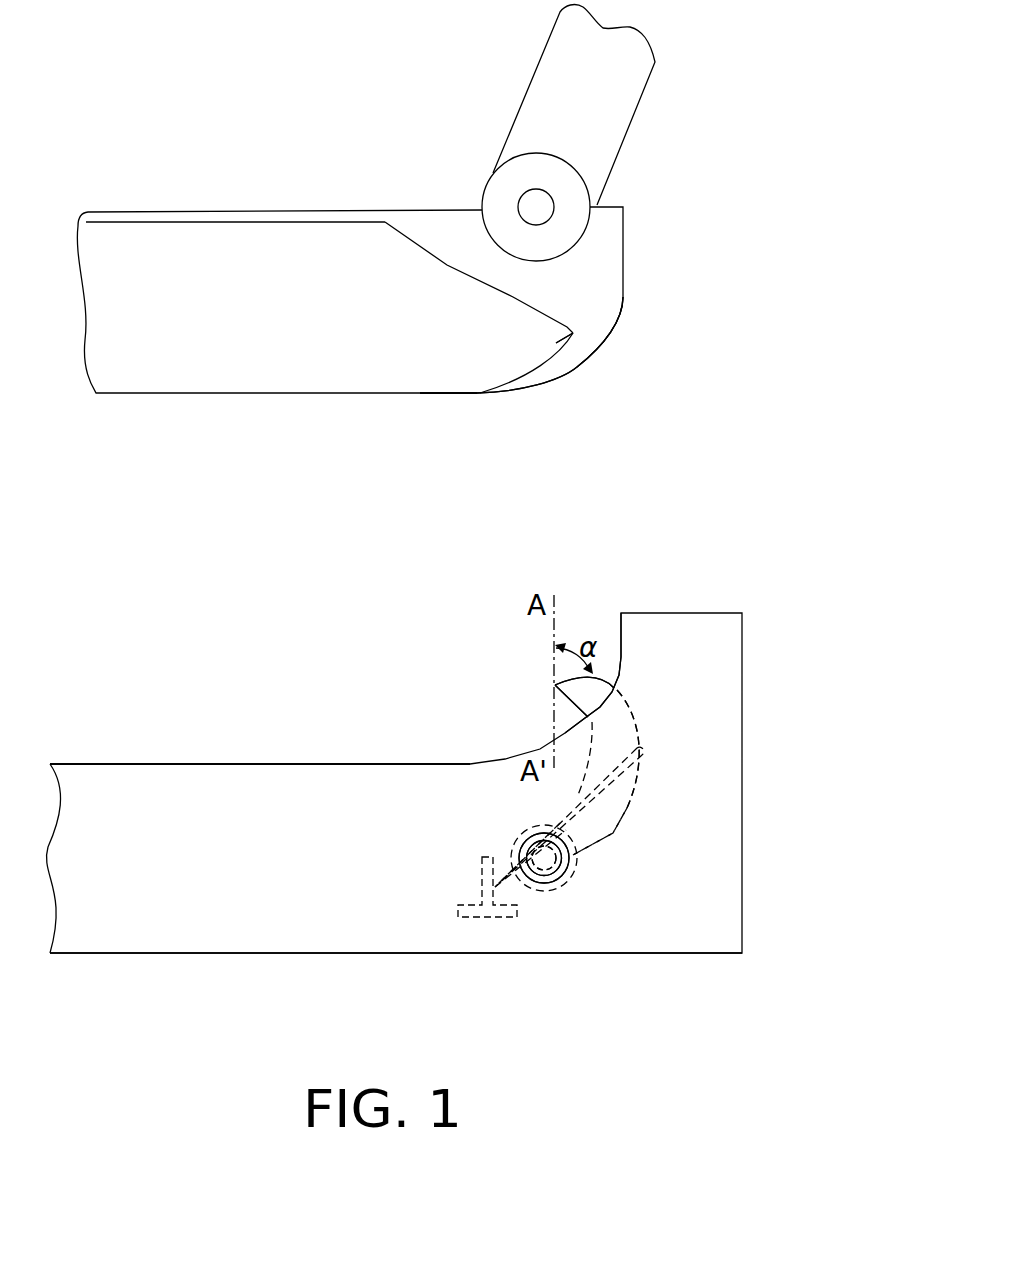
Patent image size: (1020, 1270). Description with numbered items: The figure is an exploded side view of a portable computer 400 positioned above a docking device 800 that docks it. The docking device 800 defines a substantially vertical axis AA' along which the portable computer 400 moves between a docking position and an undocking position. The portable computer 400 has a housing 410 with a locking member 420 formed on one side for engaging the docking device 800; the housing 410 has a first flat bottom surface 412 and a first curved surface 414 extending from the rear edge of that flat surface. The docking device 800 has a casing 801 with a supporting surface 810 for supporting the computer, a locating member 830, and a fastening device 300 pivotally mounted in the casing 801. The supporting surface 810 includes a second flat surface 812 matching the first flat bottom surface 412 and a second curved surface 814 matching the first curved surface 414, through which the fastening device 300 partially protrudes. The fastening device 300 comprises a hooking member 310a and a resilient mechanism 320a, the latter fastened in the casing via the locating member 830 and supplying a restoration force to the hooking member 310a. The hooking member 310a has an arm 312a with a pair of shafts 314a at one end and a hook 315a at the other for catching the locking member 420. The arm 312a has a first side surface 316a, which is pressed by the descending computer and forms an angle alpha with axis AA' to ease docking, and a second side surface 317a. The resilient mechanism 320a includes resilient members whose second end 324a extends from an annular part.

The portable computer 400 is at (371, 155).
The housing 410 is at (714, 378).
The first flat bottom surface 412 is at (435, 393).
The first curved surface 414 is at (591, 351).
The locking member 420 is at (573, 333).
The docking device 800 is at (743, 905).
The casing 801 is at (228, 954).
The supporting surface 810 is at (150, 764).
The second flat surface 812 is at (237, 763).
The second curved surface 814 is at (620, 650).
The locating member 830 is at (473, 910).
The fastening device 300 is at (627, 808).
The hooking member 310a is at (717, 1023).
The arm 312a is at (614, 834).
The shafts 314a is at (547, 864).
The hook 315a is at (615, 692).
The first side surface 316a is at (643, 715).
The second side surface 317a is at (592, 750).
The resilient mechanism 320a is at (637, 765).
The second end 324a is at (517, 871).